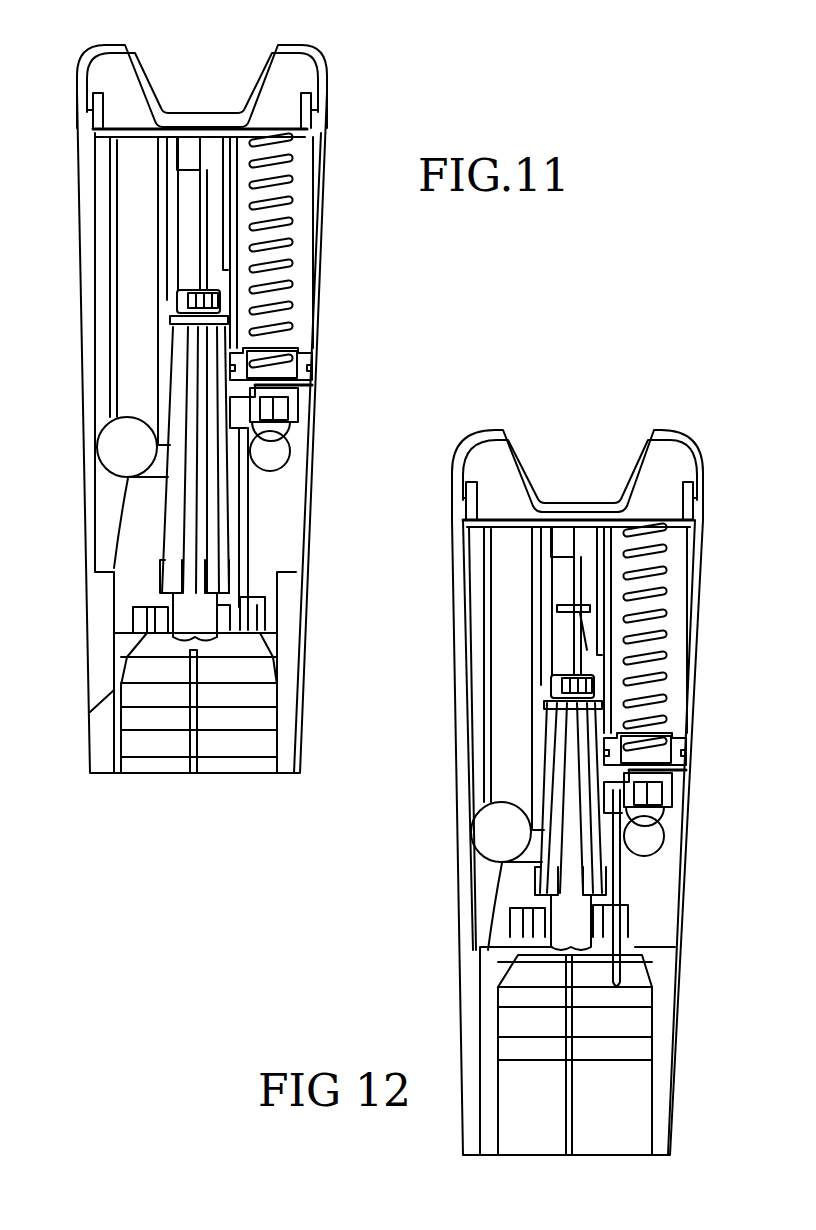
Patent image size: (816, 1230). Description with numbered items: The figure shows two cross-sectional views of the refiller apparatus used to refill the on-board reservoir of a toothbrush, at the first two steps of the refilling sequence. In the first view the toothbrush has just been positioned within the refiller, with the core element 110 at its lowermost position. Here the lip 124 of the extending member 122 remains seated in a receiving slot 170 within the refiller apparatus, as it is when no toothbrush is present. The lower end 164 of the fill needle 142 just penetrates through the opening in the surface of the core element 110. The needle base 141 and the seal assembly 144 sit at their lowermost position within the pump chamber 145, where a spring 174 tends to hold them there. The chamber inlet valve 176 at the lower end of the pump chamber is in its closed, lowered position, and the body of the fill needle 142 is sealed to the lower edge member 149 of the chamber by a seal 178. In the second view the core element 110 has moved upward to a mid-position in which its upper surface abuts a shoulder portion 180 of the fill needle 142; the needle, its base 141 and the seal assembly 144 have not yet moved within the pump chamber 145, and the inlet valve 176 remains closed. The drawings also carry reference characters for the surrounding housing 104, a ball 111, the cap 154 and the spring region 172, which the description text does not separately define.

In FIG. 11, the housing body 104 is at (293, 636).
In FIG. 11, the core element 110 is at (263, 697).
In FIG. 12, the core element 110 is at (640, 1025).
In FIG. 11, the ball 111 is at (105, 440).
In FIG. 12, the ball 111 is at (483, 817).
In FIG. 11, the extending member 122 is at (200, 350).
In FIG. 12, the extending member 122 is at (557, 745).
In FIG. 11, the lip 124 is at (187, 303).
In FIG. 12, the lip 124 is at (557, 607).
In FIG. 12, the needle base 141 is at (675, 760).
In FIG. 11, the fill needle 142 is at (255, 506).
In FIG. 12, the fill needle 142 is at (628, 943).
In FIG. 11, the seal assembly 144 is at (305, 350).
In FIG. 12, the seal assembly 144 is at (672, 733).
In FIG. 11, the pump chamber 145 is at (300, 286).
In FIG. 12, the pump chamber 145 is at (680, 658).
In FIG. 11, the lower edge member 149 is at (307, 388).
In FIG. 12, the lower edge member 149 is at (680, 782).
In FIG. 11, the cap 154 is at (312, 48).
In FIG. 12, the cap 154 is at (688, 440).
In FIG. 11, the lower end 164 is at (267, 600).
In FIG. 11, the receiving slot 170 is at (183, 287).
In FIG. 12, the receiving slot 170 is at (550, 680).
In FIG. 12, the spring chamber 172 is at (676, 598).
In FIG. 11, the spring 174 is at (289, 197).
In FIG. 12, the spring 174 is at (667, 636).
In FIG. 11, the chamber inlet valve 176 is at (298, 407).
In FIG. 11, the seal 178 is at (292, 430).
In FIG. 12, the seal 178 is at (666, 815).
In FIG. 12, the shoulder portion 180 is at (623, 893).